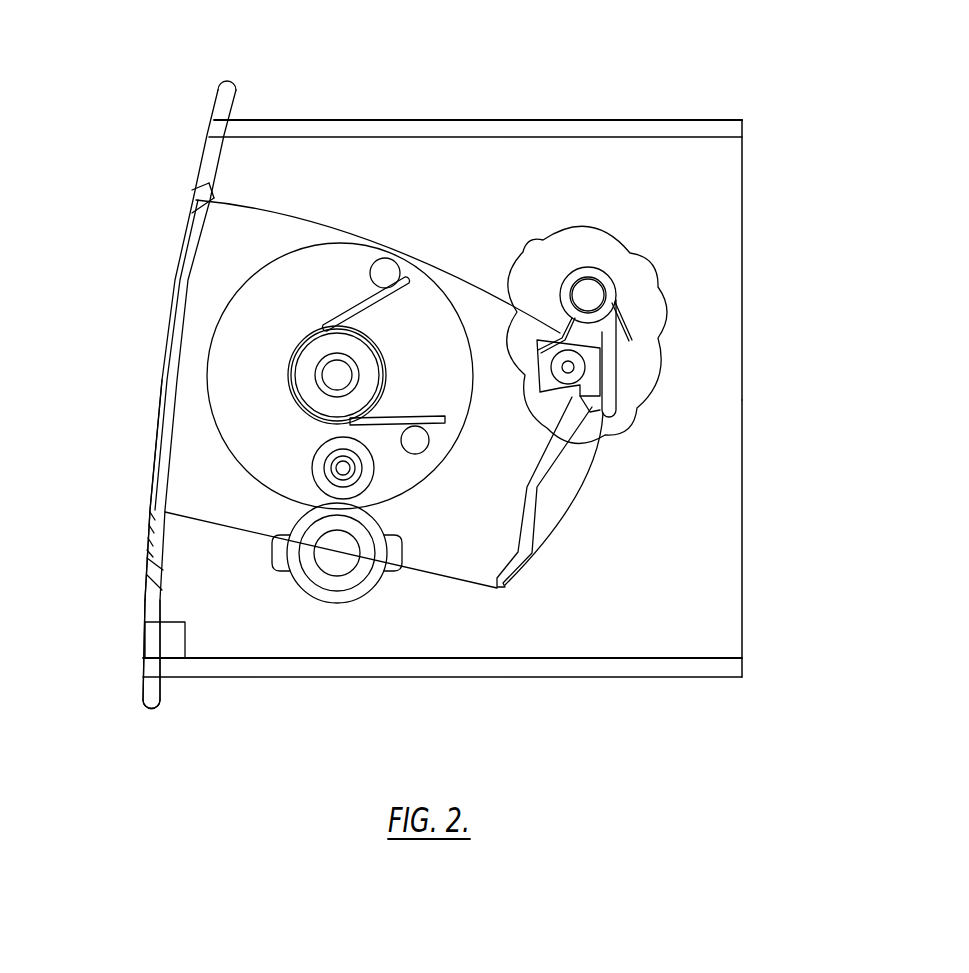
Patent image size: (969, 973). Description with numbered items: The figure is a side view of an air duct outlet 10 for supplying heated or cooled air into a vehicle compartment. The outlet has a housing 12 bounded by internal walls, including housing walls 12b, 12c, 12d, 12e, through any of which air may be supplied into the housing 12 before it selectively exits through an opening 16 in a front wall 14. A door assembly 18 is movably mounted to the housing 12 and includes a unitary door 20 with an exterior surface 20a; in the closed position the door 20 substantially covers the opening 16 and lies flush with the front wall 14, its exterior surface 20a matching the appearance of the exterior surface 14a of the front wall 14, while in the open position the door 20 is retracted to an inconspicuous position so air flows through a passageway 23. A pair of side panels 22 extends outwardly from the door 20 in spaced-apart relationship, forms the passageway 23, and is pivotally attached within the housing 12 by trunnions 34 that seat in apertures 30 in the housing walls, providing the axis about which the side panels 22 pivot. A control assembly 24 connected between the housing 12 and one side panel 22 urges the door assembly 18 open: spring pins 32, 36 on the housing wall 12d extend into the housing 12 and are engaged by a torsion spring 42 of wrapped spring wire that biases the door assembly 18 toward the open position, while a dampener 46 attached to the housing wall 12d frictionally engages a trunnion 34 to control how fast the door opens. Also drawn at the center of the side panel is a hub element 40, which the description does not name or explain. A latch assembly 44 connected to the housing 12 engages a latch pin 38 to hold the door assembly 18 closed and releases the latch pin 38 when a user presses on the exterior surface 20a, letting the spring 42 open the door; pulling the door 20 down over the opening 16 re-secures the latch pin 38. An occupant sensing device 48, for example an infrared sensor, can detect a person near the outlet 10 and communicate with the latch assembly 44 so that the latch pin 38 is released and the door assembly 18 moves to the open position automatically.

The air duct outlet 10 is at (546, 110).
The housing 12 is at (455, 118).
The housing wall 12b is at (745, 160).
The housing wall 12c is at (630, 118).
The housing wall 12d is at (722, 377).
The housing wall 12e is at (612, 679).
The front wall 14 is at (147, 598).
The exterior surface of the front wall 14a is at (146, 572).
The opening 16 is at (192, 198).
The door assembly 18 is at (160, 330).
The door 20 is at (162, 377).
The exterior surface of the door 20a is at (150, 420).
The side panels 22 is at (472, 378).
The passageway 23 is at (282, 194).
The control assembly 24 is at (404, 518).
The apertures 30 is at (323, 486).
The spring pin 32 is at (381, 259).
The trunnions 34 is at (314, 458).
The spring pin 36 is at (420, 455).
The latch pin 38 is at (585, 272).
The hub 40 is at (318, 364).
The torsion spring 42 is at (365, 296).
The latch assembly 44 is at (655, 314).
The dampener 46 is at (373, 590).
The occupant sensing device 48 is at (186, 630).